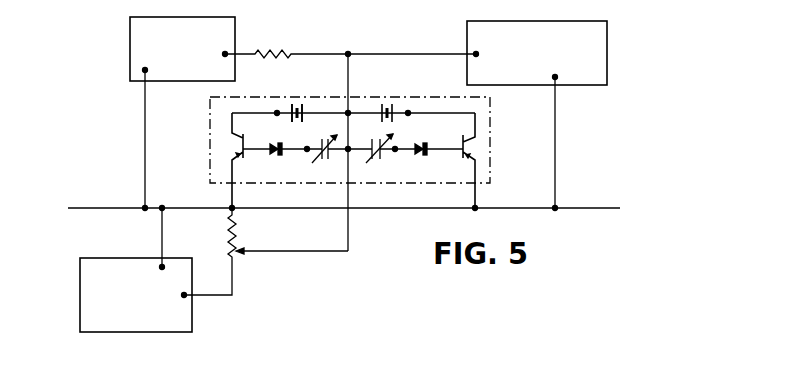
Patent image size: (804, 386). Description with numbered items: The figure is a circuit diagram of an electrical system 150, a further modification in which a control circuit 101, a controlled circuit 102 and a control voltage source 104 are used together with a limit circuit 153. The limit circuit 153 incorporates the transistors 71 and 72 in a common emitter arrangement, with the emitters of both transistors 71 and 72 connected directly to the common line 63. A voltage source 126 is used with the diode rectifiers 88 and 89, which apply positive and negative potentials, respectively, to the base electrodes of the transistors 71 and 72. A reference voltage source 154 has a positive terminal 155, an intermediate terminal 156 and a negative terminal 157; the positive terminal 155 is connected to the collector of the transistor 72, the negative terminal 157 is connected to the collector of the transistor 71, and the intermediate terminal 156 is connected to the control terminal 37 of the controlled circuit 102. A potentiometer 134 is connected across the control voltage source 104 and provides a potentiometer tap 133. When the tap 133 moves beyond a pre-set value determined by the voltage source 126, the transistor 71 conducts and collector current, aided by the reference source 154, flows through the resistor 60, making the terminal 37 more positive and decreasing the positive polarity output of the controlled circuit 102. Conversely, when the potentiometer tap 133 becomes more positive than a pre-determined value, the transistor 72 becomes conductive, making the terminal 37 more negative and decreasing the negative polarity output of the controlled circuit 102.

The control circuit 101 is at (237, 33).
The resistor 60 is at (277, 51).
The controlled circuit 102 is at (503, 84).
The control terminal 37 is at (472, 53).
The electrical system 150 is at (368, 26).
The intermediate terminal 156 is at (352, 110).
The negative terminal 157 is at (277, 110).
The reference voltage source 154 is at (304, 108).
The positive terminal 155 is at (410, 112).
The limit circuit 153 is at (490, 133).
The transistor 71 is at (243, 139).
The transistor 72 is at (462, 143).
The diode rectifier 88 is at (280, 155).
The diode rectifier 89 is at (428, 156).
The voltage source 126 is at (327, 156).
The common line 63 is at (577, 208).
The control voltage source 104 is at (177, 258).
The potentiometer tap 133 is at (241, 247).
The potentiometer 134 is at (238, 258).